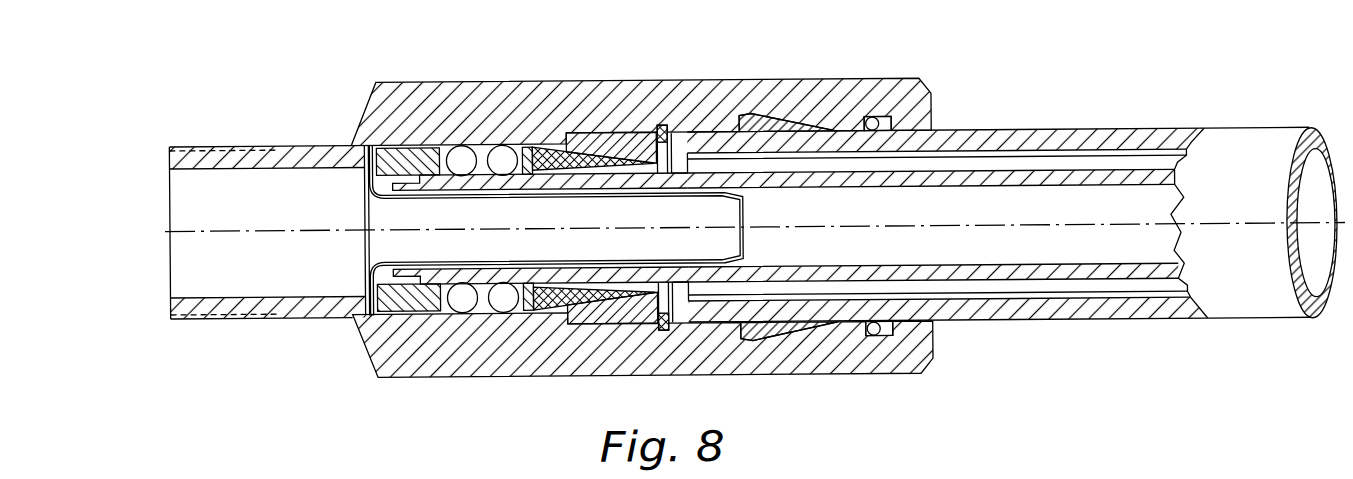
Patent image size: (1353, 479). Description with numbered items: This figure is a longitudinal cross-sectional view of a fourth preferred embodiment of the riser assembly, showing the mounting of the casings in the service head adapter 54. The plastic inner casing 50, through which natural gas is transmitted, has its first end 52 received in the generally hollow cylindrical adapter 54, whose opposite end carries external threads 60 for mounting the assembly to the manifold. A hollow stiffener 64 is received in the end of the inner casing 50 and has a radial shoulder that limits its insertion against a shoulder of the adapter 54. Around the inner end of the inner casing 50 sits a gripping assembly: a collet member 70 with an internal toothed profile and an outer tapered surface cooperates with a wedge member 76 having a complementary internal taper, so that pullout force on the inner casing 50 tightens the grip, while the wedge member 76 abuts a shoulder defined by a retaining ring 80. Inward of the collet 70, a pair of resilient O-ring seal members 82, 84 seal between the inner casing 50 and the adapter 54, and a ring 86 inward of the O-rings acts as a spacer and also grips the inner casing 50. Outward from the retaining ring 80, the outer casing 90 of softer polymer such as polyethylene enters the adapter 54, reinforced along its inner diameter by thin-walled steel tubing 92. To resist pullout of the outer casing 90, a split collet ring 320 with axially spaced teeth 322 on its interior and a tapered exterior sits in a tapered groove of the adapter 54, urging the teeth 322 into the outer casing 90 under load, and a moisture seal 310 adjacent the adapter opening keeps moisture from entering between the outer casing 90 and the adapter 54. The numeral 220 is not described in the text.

The inner casing 50 is at (993, 189).
The first end of the inner casing 52 is at (407, 190).
The adapter 54 is at (518, 84).
The external threads 60 is at (233, 147).
The hollow stiffener 64 is at (367, 194).
The collet member 70 is at (548, 150).
The wedge member 76 is at (612, 148).
The retaining ring 80 is at (666, 134).
The seal member 82 is at (507, 306).
The seal member 84 is at (463, 307).
The ring 86 is at (407, 307).
The outer casing 90 is at (1020, 135).
The thin-walled steel tubing 92 is at (1128, 166).
The moisture seal 310 is at (870, 125).
The collet ring 320 is at (777, 135).
The teeth 322 is at (775, 333).
The reference (cut off) 220 is at (1252, 478).